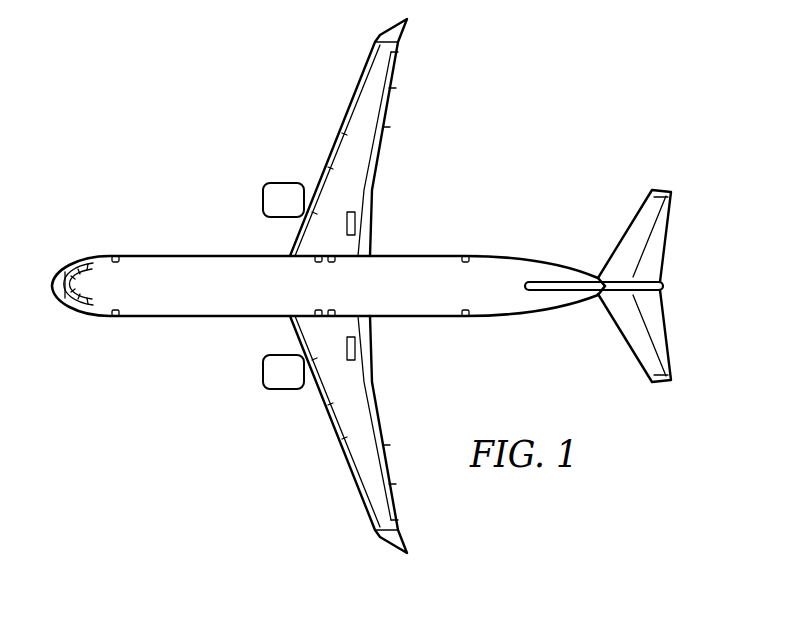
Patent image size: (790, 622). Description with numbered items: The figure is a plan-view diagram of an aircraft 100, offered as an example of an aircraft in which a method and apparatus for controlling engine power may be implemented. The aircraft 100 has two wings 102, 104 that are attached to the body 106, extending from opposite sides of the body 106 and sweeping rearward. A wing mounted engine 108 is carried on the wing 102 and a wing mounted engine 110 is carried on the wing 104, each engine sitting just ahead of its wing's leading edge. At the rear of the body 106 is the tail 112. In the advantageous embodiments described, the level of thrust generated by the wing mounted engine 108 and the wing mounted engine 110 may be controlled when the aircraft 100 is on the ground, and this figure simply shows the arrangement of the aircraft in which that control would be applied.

The aircraft 100 is at (553, 96).
The wing 102 is at (351, 97).
The wing 104 is at (351, 472).
The body 106 is at (145, 255).
The wing mounted engine 108 is at (262, 195).
The wing mounted engine 110 is at (262, 370).
The tail 112 is at (664, 236).